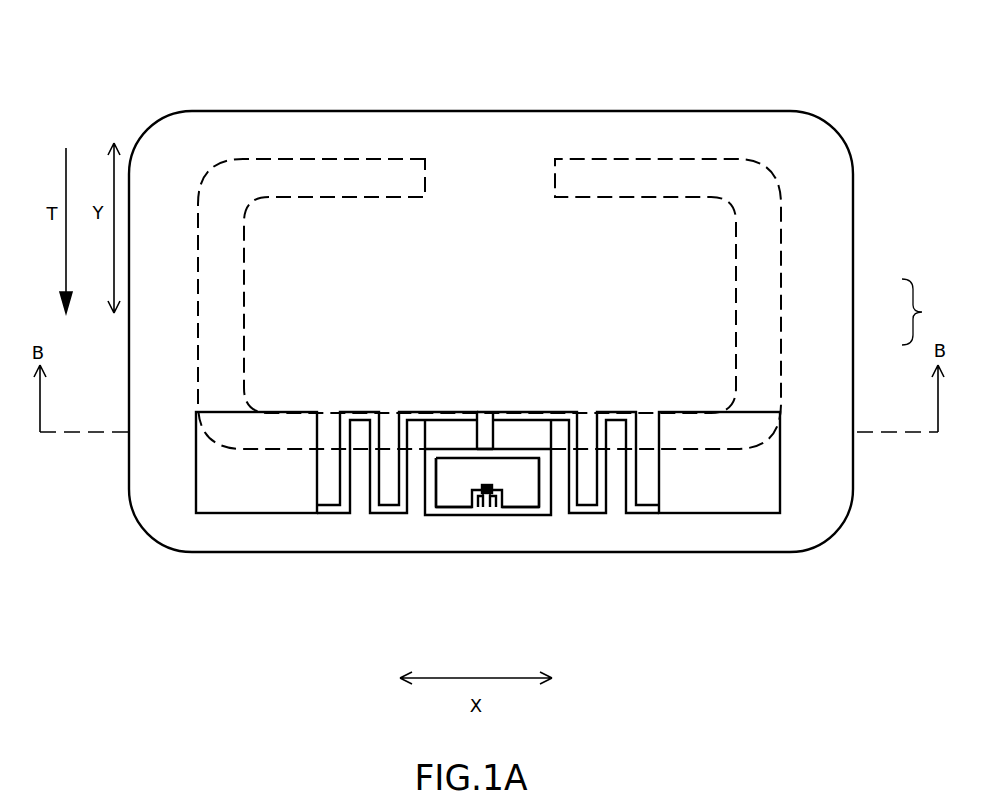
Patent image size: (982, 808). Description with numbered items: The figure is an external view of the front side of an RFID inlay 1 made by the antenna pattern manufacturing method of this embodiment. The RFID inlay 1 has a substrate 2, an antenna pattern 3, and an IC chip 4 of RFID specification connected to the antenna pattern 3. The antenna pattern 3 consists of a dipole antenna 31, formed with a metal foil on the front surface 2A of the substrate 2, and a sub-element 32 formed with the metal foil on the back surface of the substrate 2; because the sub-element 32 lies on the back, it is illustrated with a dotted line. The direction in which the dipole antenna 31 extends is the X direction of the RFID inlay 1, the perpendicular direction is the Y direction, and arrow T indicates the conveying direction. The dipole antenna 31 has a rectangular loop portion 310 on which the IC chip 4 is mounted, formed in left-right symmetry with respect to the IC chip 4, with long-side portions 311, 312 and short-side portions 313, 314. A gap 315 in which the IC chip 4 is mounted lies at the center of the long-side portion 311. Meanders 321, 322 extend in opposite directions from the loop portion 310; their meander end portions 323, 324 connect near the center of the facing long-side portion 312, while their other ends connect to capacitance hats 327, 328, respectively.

The RFID inlay 1 is at (501, 69).
The substrate 2 is at (804, 111).
The front surface 2A is at (822, 167).
The antenna pattern 3 is at (925, 312).
The dipole antenna 31 is at (548, 484).
The sub-element 32 is at (780, 320).
The loop portion 310 is at (498, 537).
The long-side portion 311 is at (462, 506).
The long-side portion 312 is at (494, 447).
The short-side portion 313 is at (431, 482).
The short-side portion 314 is at (546, 480).
The gap 315 is at (486, 508).
The meander 321 is at (465, 403).
The meander 322 is at (510, 403).
The meander end portion 323 is at (477, 420).
The meander end portion 324 is at (497, 440).
The capacitance hat 327 is at (247, 497).
The capacitance hat 328 is at (728, 490).
The IC chip 4 is at (486, 498).